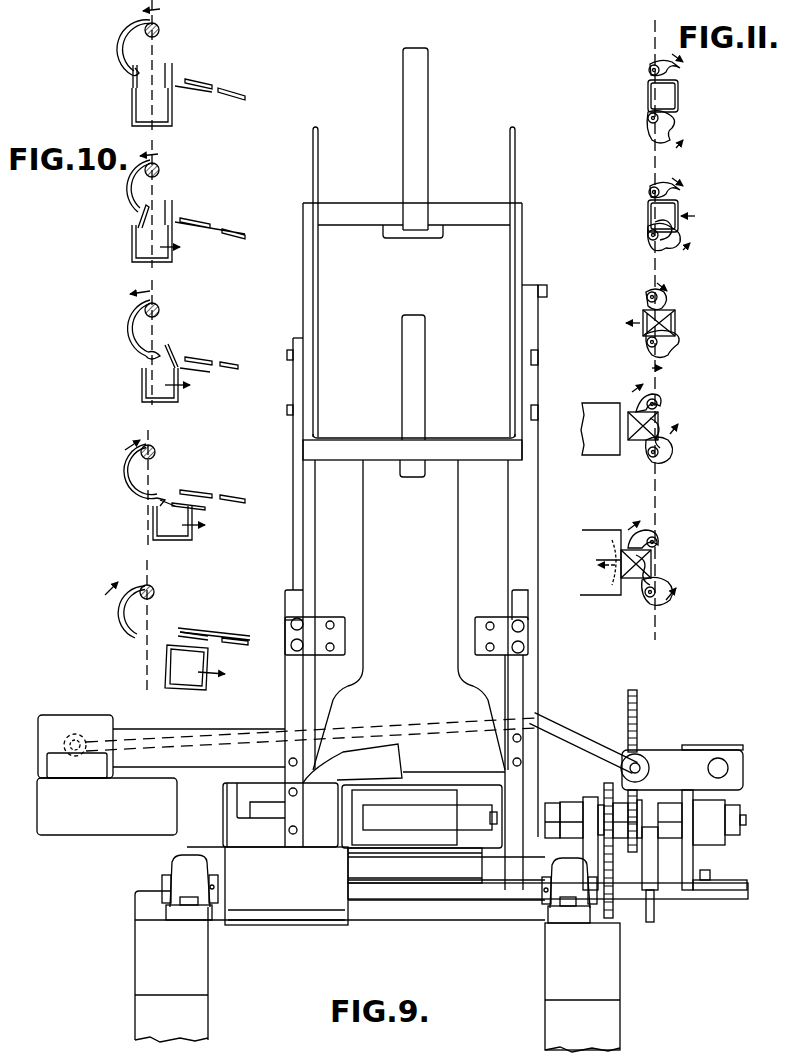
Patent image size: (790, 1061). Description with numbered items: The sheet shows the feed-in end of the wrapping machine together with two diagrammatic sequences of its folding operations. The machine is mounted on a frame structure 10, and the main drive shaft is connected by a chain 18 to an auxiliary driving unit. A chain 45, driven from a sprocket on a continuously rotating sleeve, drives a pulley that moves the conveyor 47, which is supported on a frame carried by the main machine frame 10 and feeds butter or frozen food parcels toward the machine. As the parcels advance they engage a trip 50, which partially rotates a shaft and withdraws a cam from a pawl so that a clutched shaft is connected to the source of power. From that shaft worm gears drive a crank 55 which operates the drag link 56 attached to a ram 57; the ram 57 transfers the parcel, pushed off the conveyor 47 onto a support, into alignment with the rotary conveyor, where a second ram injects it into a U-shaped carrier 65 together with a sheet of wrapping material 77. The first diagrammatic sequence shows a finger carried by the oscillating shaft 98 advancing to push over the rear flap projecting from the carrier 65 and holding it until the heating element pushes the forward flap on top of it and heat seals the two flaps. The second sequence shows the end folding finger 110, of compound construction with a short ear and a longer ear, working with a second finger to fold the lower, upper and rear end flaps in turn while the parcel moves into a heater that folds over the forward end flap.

In FIG. 9, the frame structure 10 is at (610, 1025).
In FIG. 9, the chain 18 is at (636, 708).
In FIG. 9, the chain 45 is at (612, 855).
In FIG. 9, the conveyor 47 is at (246, 905).
In FIG. 9, the trip 50 is at (404, 763).
In FIG. 9, the crank 55 is at (665, 762).
In FIG. 9, the drag link 56 is at (562, 728).
In FIG. 9, the ram 57 is at (98, 832).
In FIG. 10, the U-shaped carrier 65 is at (174, 124).
In FIG. 10, the wrapping material 77 is at (173, 72).
In FIG. 10, the shaft 98 is at (160, 27).
In FIG. 11, the end folding finger 110 is at (679, 128).